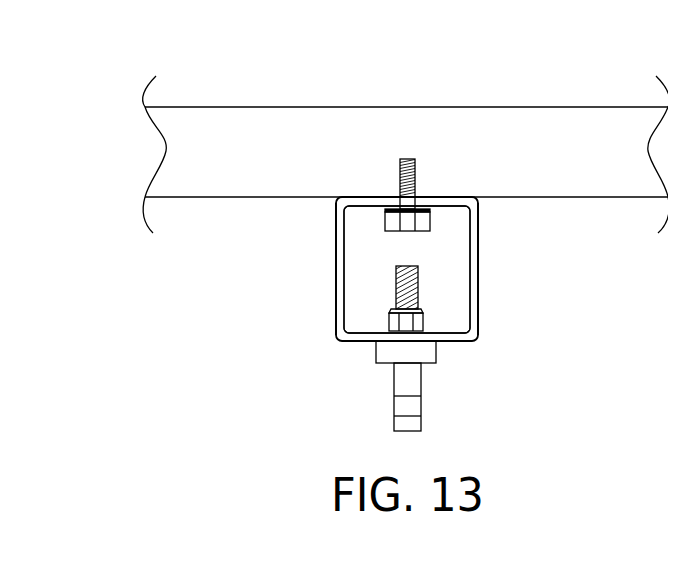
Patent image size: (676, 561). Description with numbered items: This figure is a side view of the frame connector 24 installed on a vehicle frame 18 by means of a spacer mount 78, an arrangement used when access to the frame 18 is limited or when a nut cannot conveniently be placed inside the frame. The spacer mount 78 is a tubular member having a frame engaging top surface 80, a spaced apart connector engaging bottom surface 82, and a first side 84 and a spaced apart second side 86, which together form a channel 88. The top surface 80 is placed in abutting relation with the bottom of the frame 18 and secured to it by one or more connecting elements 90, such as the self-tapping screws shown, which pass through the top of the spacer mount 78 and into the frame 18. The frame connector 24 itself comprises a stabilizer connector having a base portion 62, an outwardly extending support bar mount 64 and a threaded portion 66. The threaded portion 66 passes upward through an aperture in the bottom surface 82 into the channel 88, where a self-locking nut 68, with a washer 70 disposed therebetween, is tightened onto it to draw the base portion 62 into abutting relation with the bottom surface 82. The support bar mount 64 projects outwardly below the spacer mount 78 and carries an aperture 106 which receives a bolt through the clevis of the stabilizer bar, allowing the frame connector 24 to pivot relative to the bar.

The frame 18 is at (384, 122).
The frame connector 24 is at (369, 400).
The base portion 62 is at (437, 357).
The support bar mount 64 is at (421, 420).
The threaded portion 66 is at (420, 295).
The self-locking nut 68 is at (392, 322).
The washer 70 is at (477, 334).
The spacer mount 78 is at (320, 339).
The frame engaging top surface 80 is at (447, 192).
The connector engaging bottom surface 82 is at (352, 342).
The first side 84 is at (335, 268).
The second side 86 is at (473, 271).
The channel 88 is at (449, 233).
The connecting elements 90 is at (388, 230).
The aperture 106 is at (434, 400).